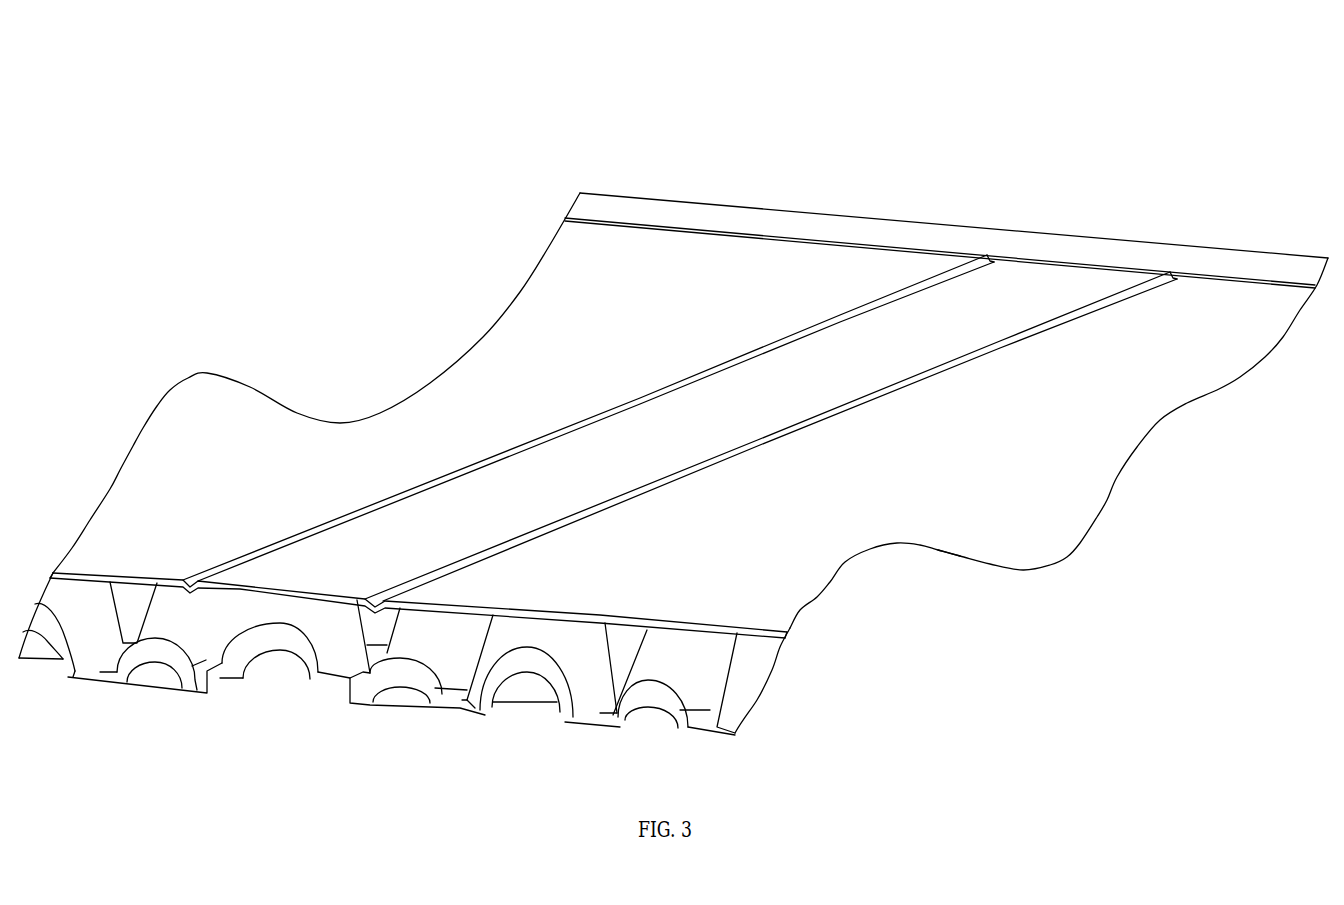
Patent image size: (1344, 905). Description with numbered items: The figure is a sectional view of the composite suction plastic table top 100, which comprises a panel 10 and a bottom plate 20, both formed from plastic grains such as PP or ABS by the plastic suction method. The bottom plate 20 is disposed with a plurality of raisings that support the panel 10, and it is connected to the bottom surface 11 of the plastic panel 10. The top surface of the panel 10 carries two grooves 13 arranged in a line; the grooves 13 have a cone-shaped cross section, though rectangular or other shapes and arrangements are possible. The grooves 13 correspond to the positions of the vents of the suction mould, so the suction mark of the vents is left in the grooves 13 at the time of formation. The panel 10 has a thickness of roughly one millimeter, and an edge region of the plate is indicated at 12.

The composite suction plastic table top 100 is at (679, 48).
The panel 10 is at (493, 348).
The bottom surface 11 is at (757, 634).
The edge portion of plate 12 is at (800, 611).
The grooves 13 is at (210, 570).
The bottom plate 20 is at (307, 682).